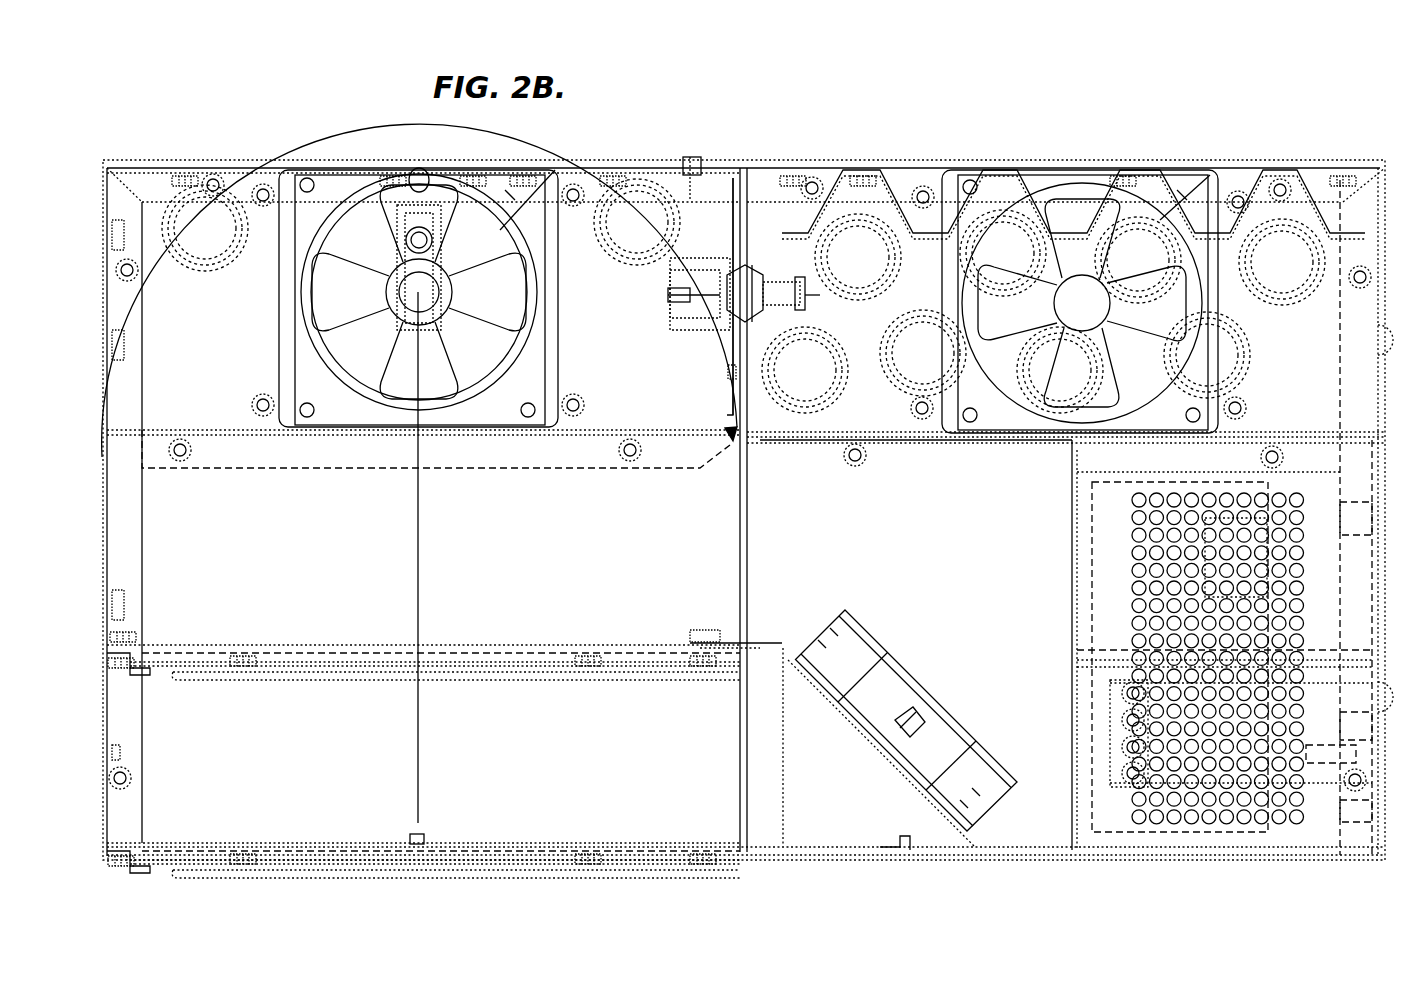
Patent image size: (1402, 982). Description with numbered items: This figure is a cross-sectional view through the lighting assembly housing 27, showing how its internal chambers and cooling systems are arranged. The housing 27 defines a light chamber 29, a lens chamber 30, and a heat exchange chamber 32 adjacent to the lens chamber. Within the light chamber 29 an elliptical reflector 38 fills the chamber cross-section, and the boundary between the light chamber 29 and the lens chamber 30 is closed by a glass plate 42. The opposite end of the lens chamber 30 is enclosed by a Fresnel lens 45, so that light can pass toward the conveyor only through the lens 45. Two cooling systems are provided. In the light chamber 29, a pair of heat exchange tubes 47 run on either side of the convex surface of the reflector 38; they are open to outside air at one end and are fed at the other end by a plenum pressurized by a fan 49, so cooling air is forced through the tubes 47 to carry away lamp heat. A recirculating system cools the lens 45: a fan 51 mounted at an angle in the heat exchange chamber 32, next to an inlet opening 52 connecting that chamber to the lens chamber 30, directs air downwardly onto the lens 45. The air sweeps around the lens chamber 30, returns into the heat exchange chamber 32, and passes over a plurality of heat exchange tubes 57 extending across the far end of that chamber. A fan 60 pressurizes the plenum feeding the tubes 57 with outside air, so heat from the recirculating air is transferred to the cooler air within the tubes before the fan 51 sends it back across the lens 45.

The housing 27 is at (315, 160).
The heat exchange tubes 47 is at (170, 195).
The light chamber 29 is at (702, 192).
The fan 60 is at (1075, 205).
The elliptical reflector 38 is at (197, 315).
The fan 49 is at (490, 328).
The heat exchange tubes 57 is at (1250, 345).
The heat exchange chamber 32 is at (877, 410).
The glass plate 42 is at (305, 648).
The Fresnel lens 45 is at (278, 843).
The fan 51 is at (910, 672).
The inlet opening 52 is at (778, 738).
The lens chamber 30 is at (705, 818).